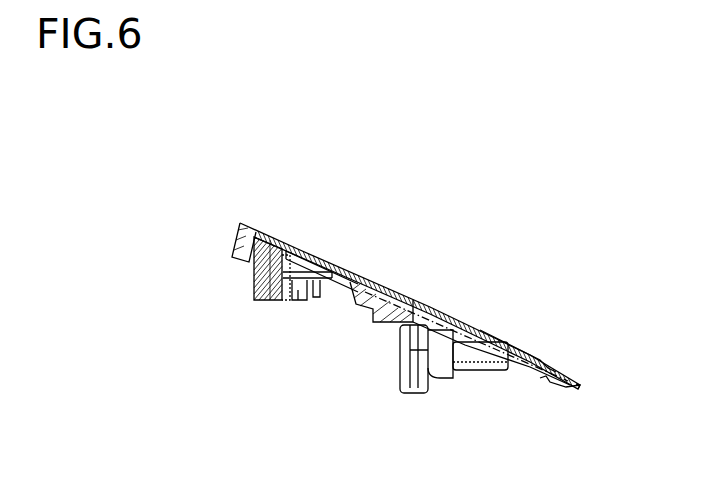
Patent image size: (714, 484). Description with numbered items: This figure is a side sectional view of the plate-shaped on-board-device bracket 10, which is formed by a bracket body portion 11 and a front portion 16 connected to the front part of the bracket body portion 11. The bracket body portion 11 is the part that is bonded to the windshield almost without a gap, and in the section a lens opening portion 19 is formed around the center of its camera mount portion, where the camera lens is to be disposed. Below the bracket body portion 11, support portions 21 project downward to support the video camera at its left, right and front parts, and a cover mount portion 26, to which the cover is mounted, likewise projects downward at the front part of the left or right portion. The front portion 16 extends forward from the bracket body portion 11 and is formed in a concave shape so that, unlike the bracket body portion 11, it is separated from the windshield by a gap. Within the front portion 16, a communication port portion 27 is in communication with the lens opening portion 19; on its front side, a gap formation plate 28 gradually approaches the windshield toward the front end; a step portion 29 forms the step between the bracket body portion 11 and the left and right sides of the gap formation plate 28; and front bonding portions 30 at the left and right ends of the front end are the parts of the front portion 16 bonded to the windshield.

The on-board-device bracket 10 is at (235, 172).
The bracket body portion 11 is at (278, 232).
The front portion 16 is at (583, 387).
The lens opening portion 19 is at (327, 268).
The support portions 21 is at (274, 301).
The cover mount portion 26 is at (480, 362).
The communication port portion 27 is at (372, 302).
The gap formation plate 28 is at (493, 342).
The step portion 29 is at (437, 314).
The front bonding portions 30 is at (563, 377).